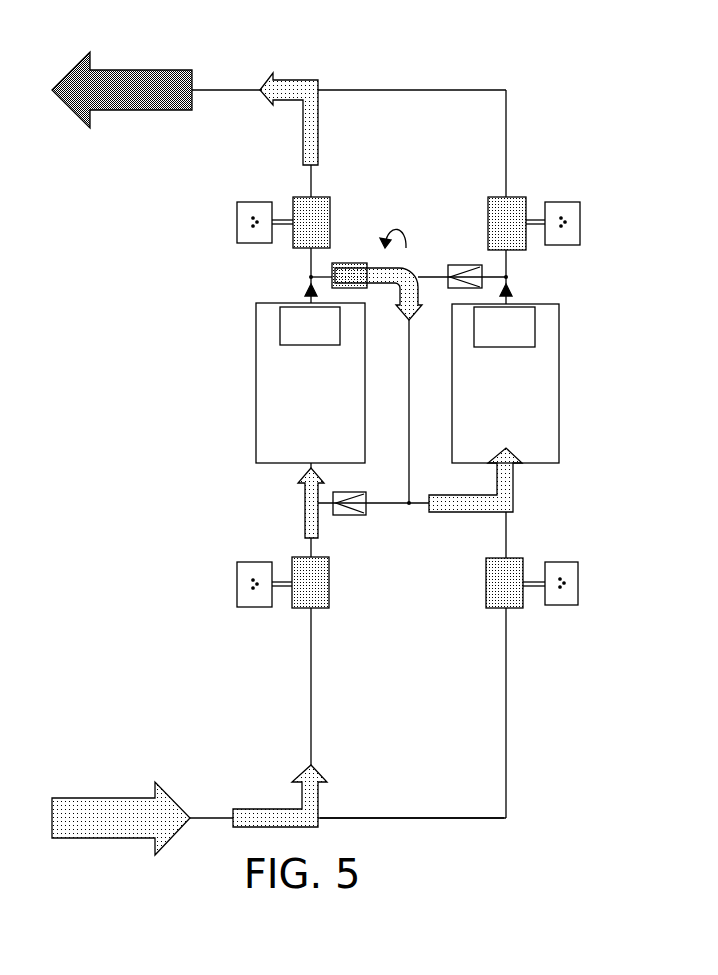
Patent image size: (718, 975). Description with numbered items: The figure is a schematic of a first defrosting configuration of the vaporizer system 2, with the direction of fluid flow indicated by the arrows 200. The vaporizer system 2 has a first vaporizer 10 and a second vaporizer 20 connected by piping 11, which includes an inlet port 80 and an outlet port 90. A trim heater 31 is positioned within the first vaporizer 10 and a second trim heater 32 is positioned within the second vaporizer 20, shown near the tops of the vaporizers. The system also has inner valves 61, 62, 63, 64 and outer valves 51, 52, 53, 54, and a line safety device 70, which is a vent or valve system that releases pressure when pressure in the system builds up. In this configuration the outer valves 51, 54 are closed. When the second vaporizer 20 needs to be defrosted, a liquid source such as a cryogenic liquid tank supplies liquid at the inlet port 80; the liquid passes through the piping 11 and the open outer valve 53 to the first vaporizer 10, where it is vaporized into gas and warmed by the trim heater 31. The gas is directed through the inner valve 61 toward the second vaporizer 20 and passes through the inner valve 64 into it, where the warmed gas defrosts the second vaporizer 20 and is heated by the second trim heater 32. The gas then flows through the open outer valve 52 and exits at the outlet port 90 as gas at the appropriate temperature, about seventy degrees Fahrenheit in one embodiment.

The vaporizer system 2 is at (585, 403).
The first vaporizer 10 is at (310, 383).
The piping 11 is at (406, 812).
The second vaporizer 20 is at (505, 383).
The trim heater 31 is at (310, 326).
The second trim heater 32 is at (504, 327).
The outer valve 51 is at (289, 236).
The outer valve 52 is at (522, 247).
The outer valve 53 is at (330, 585).
The outer valve 54 is at (473, 584).
The inner valve 61 is at (355, 262).
The inner valve 62 is at (474, 259).
The inner valve 63 is at (333, 508).
The inner valve 64 is at (455, 516).
The line safety device 70 is at (407, 228).
The inlet port 80 is at (192, 822).
The outlet port 90 is at (197, 76).
The arrows 200 is at (286, 793).